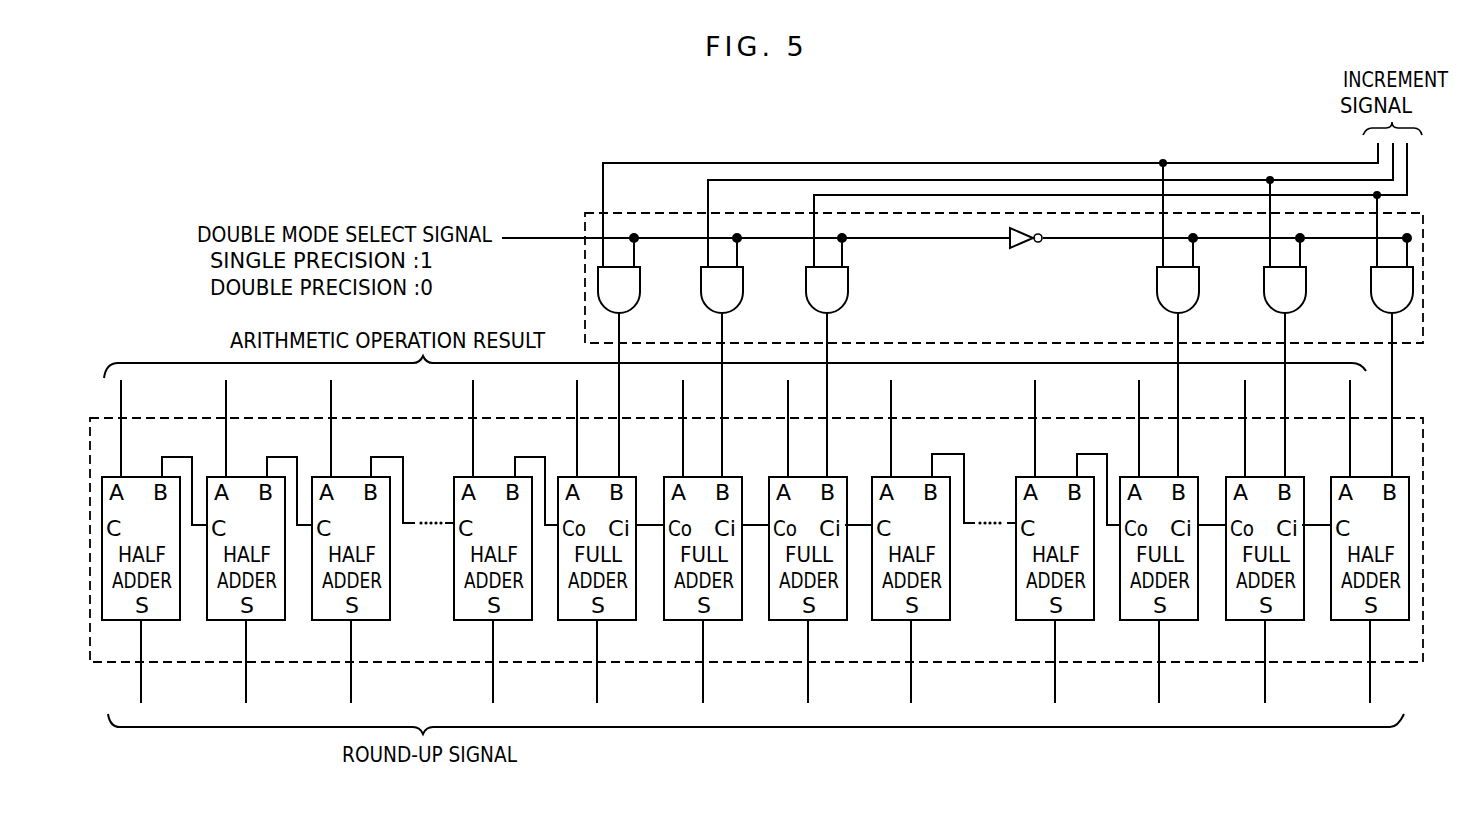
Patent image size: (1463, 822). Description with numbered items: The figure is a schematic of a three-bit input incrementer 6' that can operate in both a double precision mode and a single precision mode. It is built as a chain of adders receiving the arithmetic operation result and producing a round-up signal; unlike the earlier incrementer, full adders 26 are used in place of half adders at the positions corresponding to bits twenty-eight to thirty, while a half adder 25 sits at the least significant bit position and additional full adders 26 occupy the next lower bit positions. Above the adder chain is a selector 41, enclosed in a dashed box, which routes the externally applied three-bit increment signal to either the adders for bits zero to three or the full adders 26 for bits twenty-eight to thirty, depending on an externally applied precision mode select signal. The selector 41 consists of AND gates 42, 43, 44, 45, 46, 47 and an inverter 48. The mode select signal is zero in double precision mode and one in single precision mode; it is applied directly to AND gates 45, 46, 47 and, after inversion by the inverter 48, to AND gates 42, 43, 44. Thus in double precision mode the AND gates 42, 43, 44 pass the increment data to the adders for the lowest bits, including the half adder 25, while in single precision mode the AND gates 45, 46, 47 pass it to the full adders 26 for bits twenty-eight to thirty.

The three-bit input incrementer 6' is at (756, 376).
The selector 41 is at (585, 213).
The AND gate 42 is at (1379, 282).
The AND gate 43 is at (1272, 282).
The AND gate 44 is at (1165, 282).
The AND gate 45 is at (840, 280).
The AND gate 46 is at (735, 280).
The AND gate 47 is at (632, 280).
The inverter 48 is at (1018, 240).
The half adder 25 is at (1387, 612).
The full adder 26 is at (623, 613).